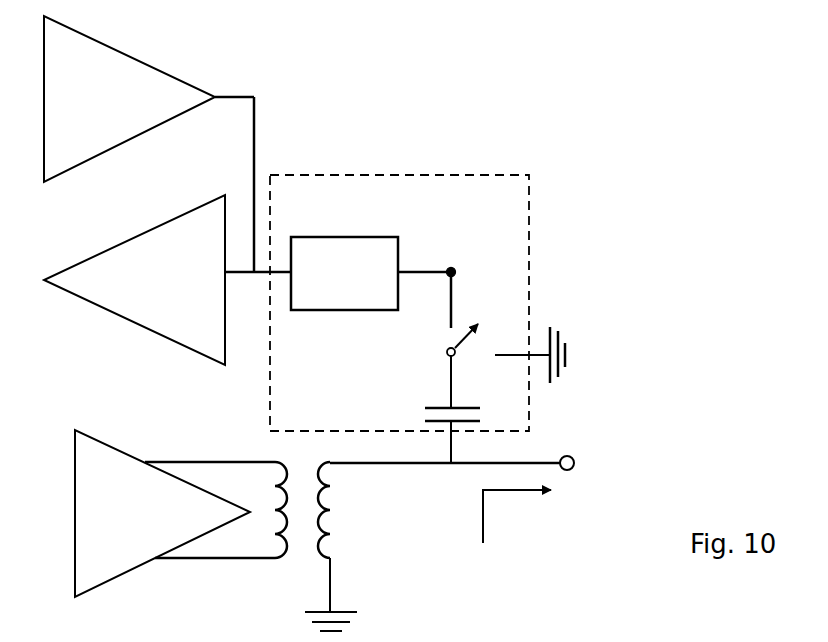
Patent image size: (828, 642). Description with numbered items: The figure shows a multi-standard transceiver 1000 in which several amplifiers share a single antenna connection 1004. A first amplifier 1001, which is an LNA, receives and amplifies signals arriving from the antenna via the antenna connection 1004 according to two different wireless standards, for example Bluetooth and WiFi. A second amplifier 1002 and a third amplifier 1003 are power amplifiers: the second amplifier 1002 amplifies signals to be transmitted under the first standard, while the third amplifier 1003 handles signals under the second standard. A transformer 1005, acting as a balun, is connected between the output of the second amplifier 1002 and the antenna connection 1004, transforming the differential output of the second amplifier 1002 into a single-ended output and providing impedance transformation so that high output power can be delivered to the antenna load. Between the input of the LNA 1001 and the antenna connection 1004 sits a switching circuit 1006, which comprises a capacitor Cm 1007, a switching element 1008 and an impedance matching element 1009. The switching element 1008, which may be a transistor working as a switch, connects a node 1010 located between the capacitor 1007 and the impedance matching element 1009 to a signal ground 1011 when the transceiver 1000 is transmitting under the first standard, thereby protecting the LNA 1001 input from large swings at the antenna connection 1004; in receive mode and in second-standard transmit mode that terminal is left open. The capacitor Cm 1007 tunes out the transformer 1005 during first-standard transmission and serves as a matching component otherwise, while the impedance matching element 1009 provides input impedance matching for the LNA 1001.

The transceiver 1000 is at (326, 79).
The first amplifier 1001 is at (110, 290).
The second amplifier 1002 is at (83, 538).
The third amplifier 1003 is at (147, 88).
The antenna connection 1004 is at (574, 458).
The transformer 1005 is at (292, 459).
The switching circuit 1006 is at (408, 175).
The capacitor Cm 1007 is at (388, 404).
The switching element 1008 is at (446, 338).
The impedance matching element 1009 is at (371, 273).
The node 1010 is at (453, 271).
The signal ground 1011 is at (565, 347).